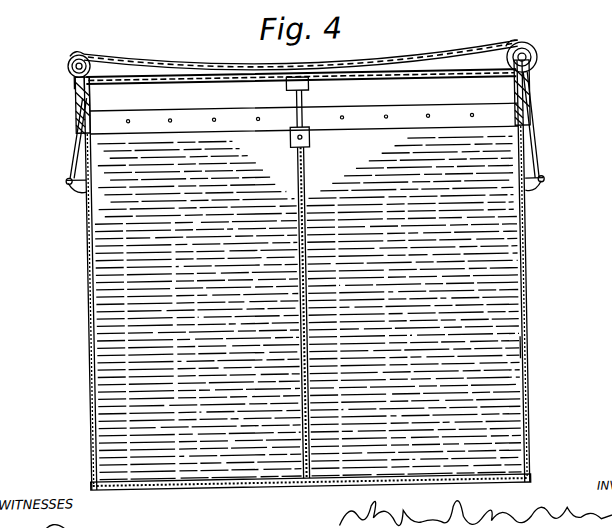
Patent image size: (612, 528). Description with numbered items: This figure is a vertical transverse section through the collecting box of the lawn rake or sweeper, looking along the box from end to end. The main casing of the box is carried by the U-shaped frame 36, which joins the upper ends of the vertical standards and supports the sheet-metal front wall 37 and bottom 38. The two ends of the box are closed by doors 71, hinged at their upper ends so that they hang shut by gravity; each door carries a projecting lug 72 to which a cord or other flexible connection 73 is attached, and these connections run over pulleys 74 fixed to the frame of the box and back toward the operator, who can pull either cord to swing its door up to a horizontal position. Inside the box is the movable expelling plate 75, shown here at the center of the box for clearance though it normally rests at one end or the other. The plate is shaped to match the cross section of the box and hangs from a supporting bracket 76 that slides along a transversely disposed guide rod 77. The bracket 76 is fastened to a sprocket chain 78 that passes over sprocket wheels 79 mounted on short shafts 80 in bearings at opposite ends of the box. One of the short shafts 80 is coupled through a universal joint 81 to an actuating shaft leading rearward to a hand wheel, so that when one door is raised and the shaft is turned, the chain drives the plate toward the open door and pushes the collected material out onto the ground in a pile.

The U-shaped frame 36 is at (87, 114).
The front wall 37 is at (499, 356).
The bottom 38 is at (222, 484).
The doors 71 is at (88, 260).
The projecting lug 72 is at (74, 185).
The cord or flexible connection 73 is at (72, 153).
The pulleys 74 is at (80, 86).
The expelling plate 75 is at (307, 271).
The supporting bracket 76 is at (307, 100).
The guide rod 77 is at (444, 81).
The sprocket chain 78 is at (177, 58).
The sprocket wheels 79 is at (79, 51).
The short shafts 80 is at (537, 49).
The universal joint 81 is at (72, 62).